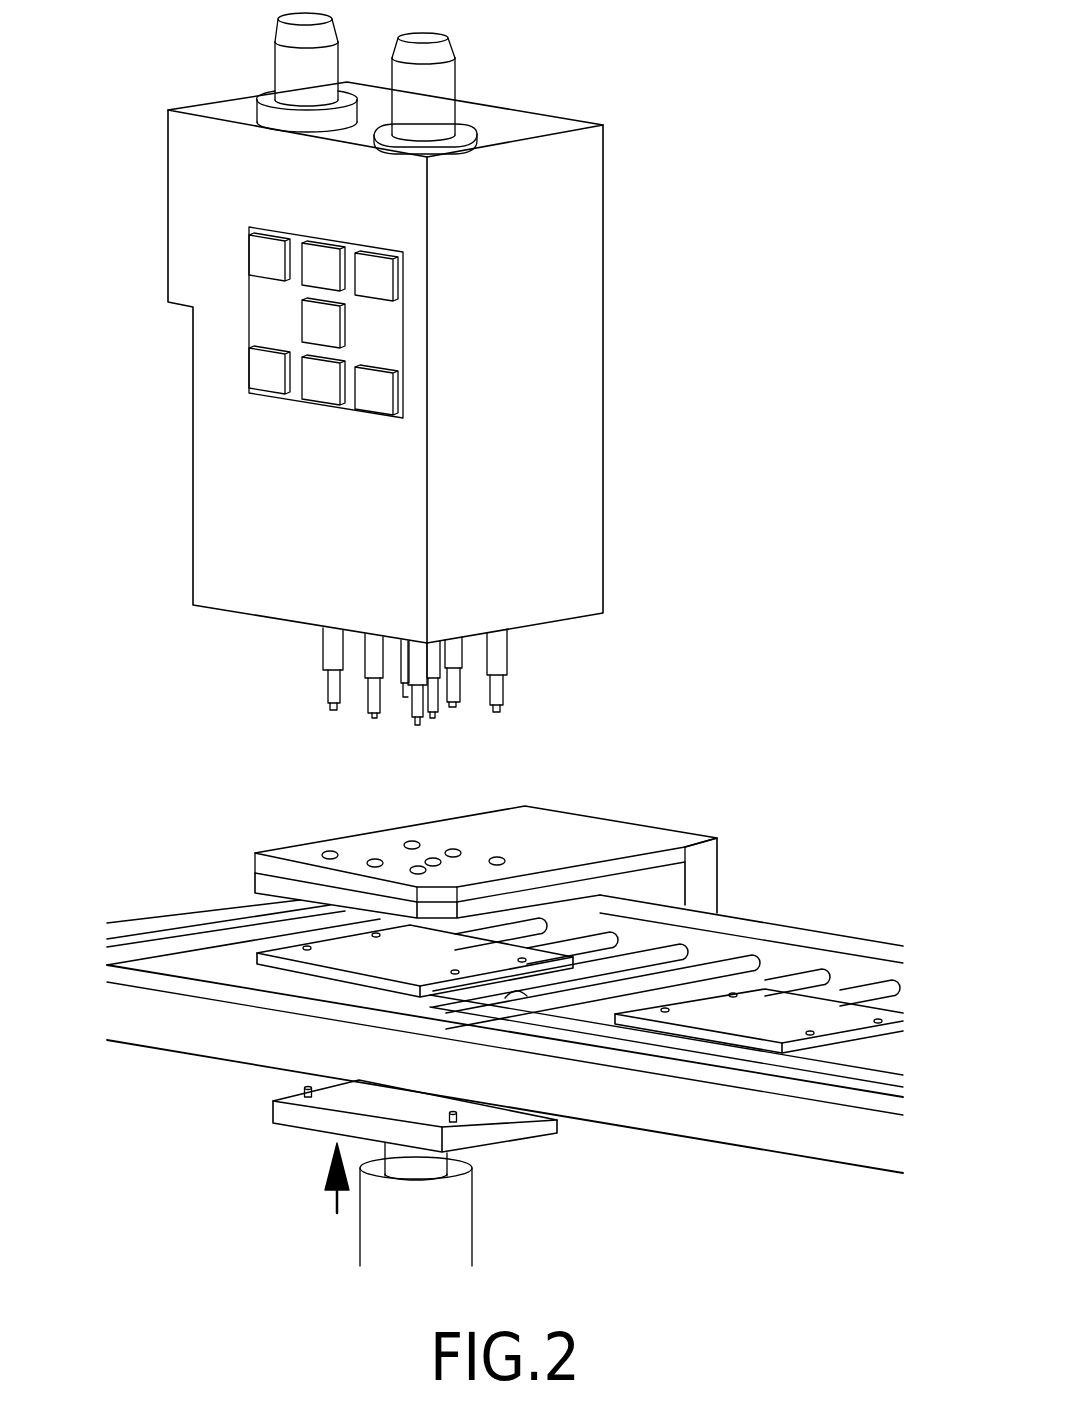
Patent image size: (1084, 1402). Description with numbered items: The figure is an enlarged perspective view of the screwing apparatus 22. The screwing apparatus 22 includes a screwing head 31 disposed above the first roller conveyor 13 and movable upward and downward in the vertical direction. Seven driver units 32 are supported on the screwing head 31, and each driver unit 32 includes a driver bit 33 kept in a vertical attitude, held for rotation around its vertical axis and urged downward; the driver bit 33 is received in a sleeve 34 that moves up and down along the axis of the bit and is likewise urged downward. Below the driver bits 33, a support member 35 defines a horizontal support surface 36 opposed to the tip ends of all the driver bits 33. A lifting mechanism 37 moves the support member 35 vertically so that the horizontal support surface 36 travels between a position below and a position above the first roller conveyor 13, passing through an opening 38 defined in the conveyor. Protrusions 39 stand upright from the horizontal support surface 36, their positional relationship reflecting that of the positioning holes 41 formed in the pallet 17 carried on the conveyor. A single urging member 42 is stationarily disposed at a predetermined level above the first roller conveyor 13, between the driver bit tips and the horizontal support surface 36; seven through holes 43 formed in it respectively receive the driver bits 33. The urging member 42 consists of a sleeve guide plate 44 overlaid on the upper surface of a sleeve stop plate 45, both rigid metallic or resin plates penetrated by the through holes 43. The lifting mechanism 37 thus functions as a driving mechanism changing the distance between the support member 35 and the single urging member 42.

The first roller conveyor 13 is at (800, 925).
The pallet 17 is at (378, 982).
The screwing apparatus 22 is at (670, 277).
The screwing head 31 is at (603, 455).
The driver unit 32 is at (321, 653).
The driver bit 33 is at (328, 705).
The sleeve 34 is at (328, 684).
The support member 35 is at (525, 1129).
The horizontal support surface 36 is at (357, 1105).
The lifting mechanism 37 is at (472, 1232).
The opening 38 is at (520, 1000).
The protrusion 39 is at (303, 1091).
The positioning hole 41 is at (380, 935).
The single urging member 42 is at (427, 820).
The through hole 43 is at (328, 853).
The sleeve guide plate 44 is at (267, 868).
The sleeve stop plate 45 is at (267, 887).